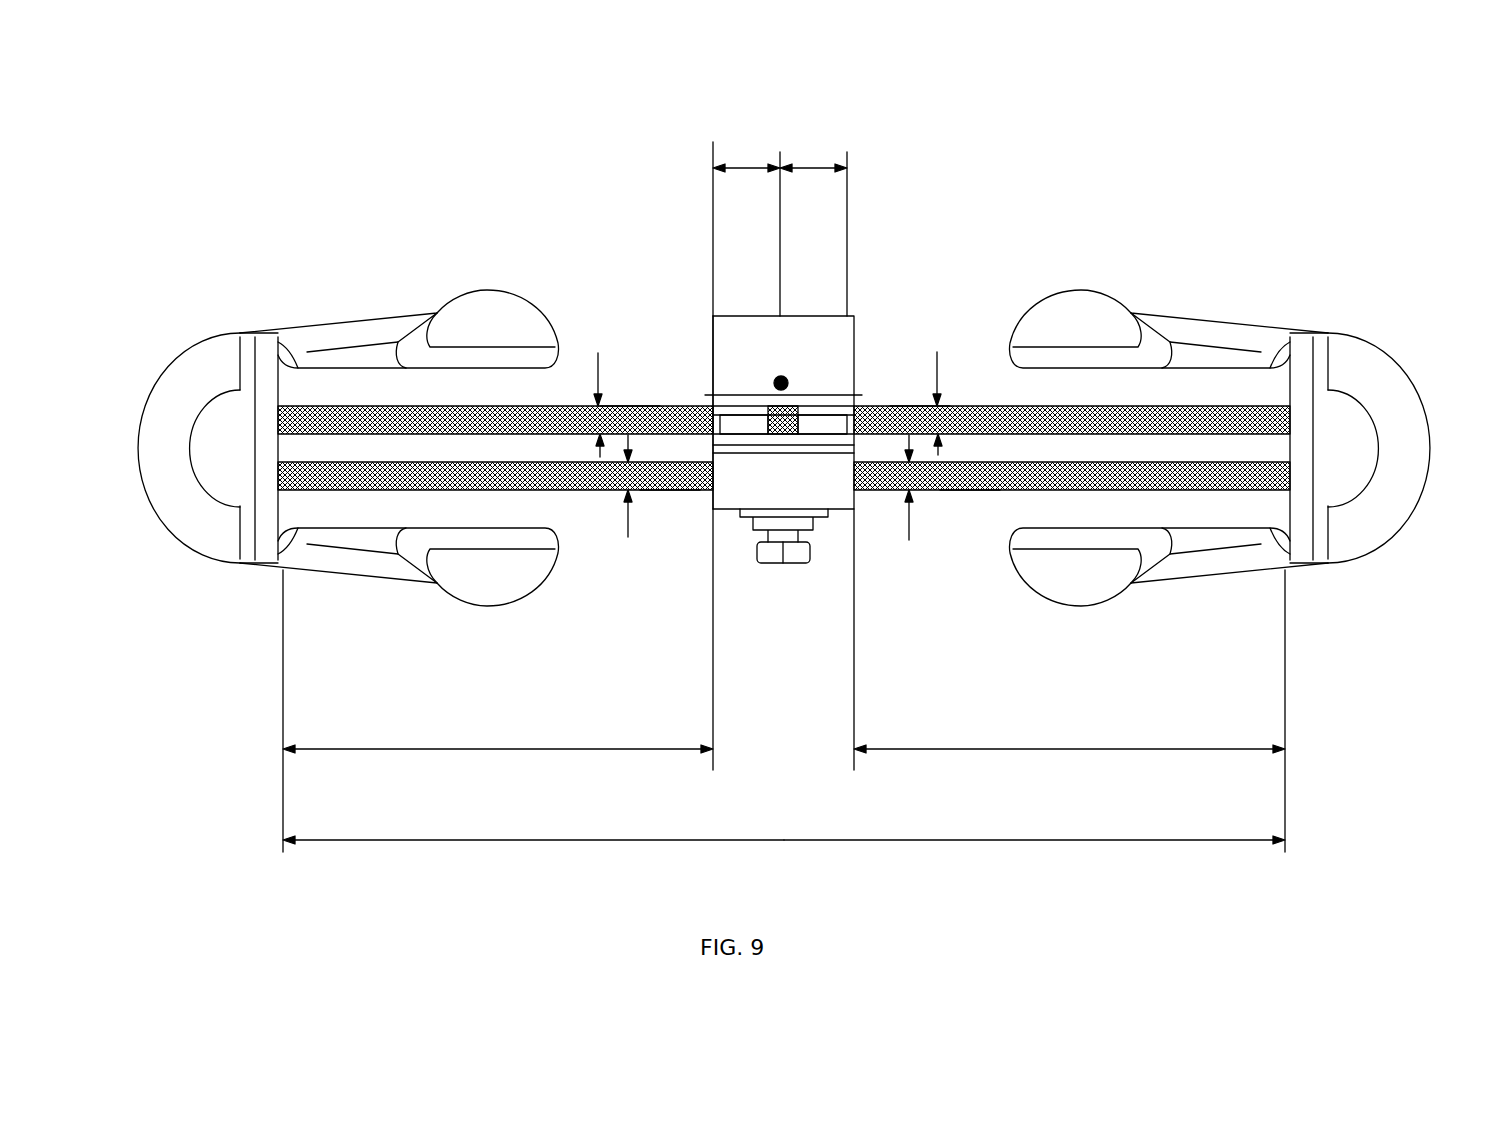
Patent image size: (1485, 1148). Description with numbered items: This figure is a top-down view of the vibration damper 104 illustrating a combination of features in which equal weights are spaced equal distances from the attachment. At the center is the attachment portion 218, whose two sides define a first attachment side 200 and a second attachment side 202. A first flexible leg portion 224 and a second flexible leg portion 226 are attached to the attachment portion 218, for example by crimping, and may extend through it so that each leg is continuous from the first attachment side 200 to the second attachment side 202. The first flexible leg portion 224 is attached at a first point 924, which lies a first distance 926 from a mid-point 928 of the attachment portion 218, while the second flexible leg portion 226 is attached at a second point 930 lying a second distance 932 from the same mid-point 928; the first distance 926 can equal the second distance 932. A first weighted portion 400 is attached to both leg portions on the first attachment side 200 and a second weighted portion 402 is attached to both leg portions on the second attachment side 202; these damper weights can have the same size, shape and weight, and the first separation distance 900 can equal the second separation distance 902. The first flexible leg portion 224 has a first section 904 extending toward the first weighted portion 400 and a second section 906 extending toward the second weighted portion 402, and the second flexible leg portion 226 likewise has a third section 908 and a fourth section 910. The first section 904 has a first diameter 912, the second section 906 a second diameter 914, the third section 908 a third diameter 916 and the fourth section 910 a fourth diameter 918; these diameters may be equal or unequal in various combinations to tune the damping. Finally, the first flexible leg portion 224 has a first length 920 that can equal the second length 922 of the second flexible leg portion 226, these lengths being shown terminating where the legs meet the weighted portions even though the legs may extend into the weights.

The vibration damper 104 is at (398, 140).
The first attachment side 200 is at (862, 300).
The second attachment side 202 is at (697, 298).
The attachment portion 218 is at (852, 517).
The first flexible leg portion 224 is at (645, 406).
The second flexible leg portion 226 is at (687, 490).
The first weighted portion 400 is at (1247, 325).
The second weighted portion 402 is at (347, 323).
The first separation distance 900 is at (1000, 749).
The second separation distance 902 is at (470, 749).
The first section 904 is at (913, 406).
The second section 906 is at (632, 406).
The third section 908 is at (975, 490).
The fourth section 910 is at (668, 490).
The first diameter 912 is at (940, 352).
The second diameter 914 is at (595, 367).
The third diameter 916 is at (913, 523).
The fourth diameter 918 is at (626, 517).
The first length 920 is at (590, 840).
The second length 922 is at (1100, 840).
The first point 924 is at (865, 386).
The first distance 926 is at (816, 166).
The mid-point 928 is at (781, 376).
The second point 930 is at (703, 386).
The second distance 932 is at (743, 166).